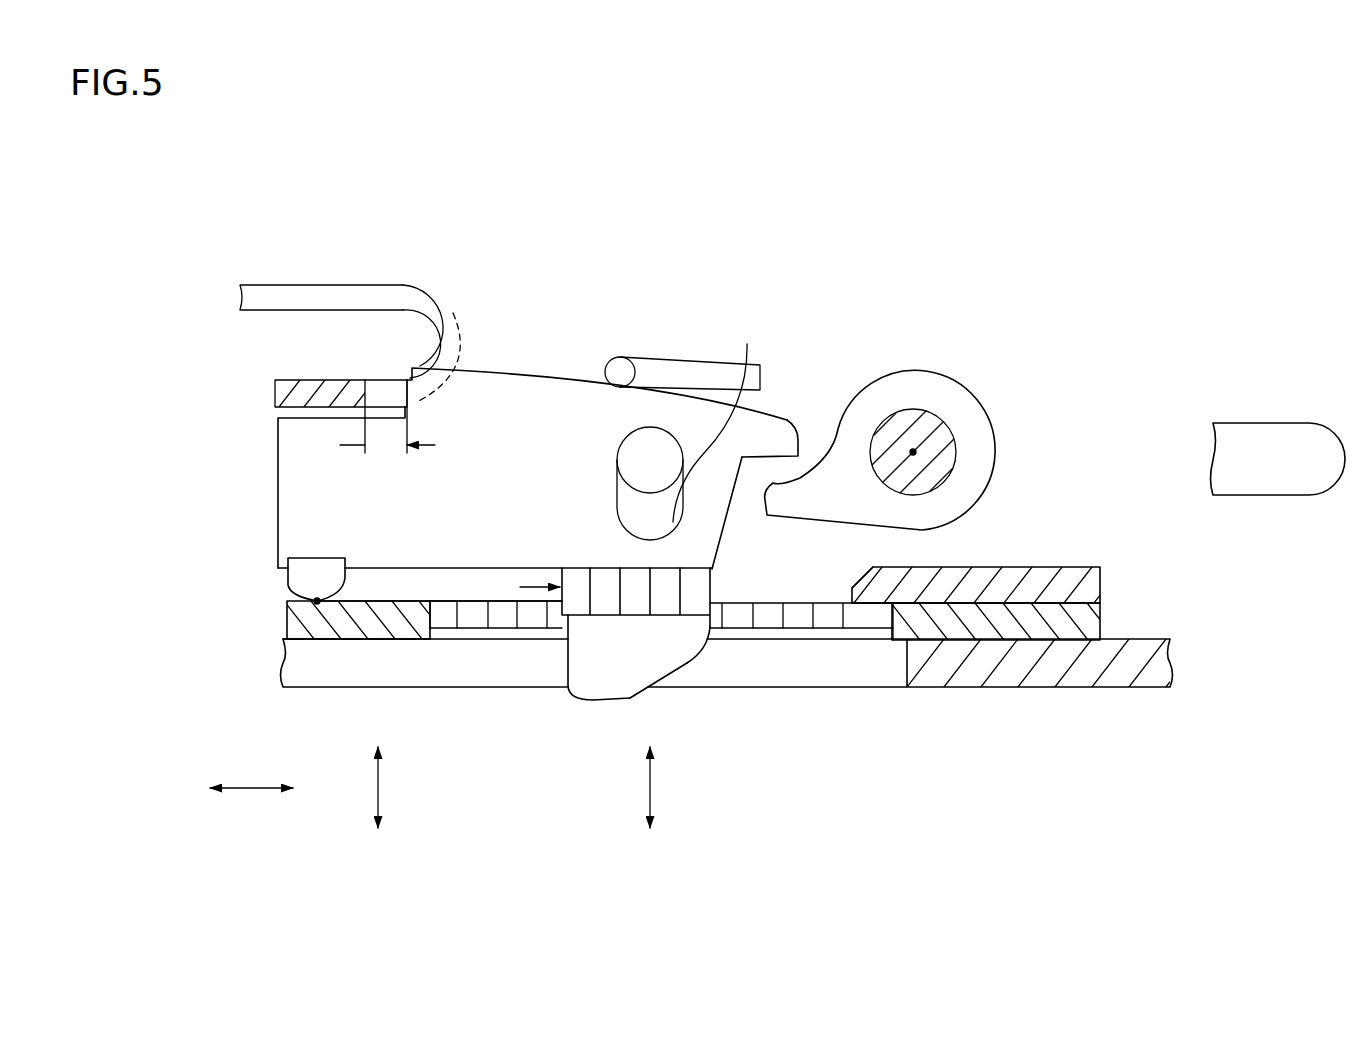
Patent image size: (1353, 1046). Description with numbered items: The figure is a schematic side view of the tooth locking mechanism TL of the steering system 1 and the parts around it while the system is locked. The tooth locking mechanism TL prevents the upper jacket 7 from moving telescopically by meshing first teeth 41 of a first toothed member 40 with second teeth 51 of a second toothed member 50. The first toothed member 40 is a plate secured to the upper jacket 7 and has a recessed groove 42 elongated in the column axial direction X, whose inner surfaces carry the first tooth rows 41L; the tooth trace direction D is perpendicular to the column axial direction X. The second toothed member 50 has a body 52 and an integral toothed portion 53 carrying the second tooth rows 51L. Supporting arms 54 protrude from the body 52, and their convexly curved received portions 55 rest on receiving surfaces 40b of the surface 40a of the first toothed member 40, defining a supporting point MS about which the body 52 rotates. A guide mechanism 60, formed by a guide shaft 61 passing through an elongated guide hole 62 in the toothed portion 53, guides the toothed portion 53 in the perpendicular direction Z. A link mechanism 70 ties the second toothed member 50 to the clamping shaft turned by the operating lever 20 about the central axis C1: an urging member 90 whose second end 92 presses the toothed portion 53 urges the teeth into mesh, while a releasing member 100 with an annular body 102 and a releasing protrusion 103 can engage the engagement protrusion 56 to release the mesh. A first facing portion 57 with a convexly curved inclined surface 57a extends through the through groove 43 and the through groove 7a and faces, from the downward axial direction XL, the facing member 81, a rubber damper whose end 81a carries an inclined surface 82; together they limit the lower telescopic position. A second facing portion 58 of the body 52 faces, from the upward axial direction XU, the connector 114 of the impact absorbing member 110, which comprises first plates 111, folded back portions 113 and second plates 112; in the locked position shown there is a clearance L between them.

The steering system 1 is at (868, 294).
The upper jacket 7 is at (726, 666).
The through groove 7a is at (295, 665).
The operating lever 20 is at (1248, 432).
The first toothed member 40 is at (900, 642).
The surface of first toothed member 40a is at (322, 625).
The receiving surface 40b is at (288, 598).
The first teeth 41 is at (800, 619).
The first tooth row 41L is at (846, 613).
The recessed groove 42 is at (442, 618).
The through groove 43 is at (503, 631).
The second toothed member 50 is at (517, 516).
The second teeth 51 is at (638, 603).
The second tooth row 51L is at (513, 588).
The body 52 is at (303, 490).
The toothed portion 53 is at (713, 545).
The supporting arm 54 is at (313, 573).
The received portion 55 is at (342, 598).
The engagement protrusion 56 is at (782, 435).
The first facing portion 57 is at (647, 687).
The inclined surface 57a is at (693, 664).
The second facing portion 58 is at (433, 377).
The guide mechanism 60 is at (681, 399).
The guide shaft 61 is at (667, 450).
The guide hole 62 is at (770, 342).
The link mechanism 70 is at (656, 274).
The facing member 81 is at (1029, 638).
The end of facing member 81a is at (880, 582).
The inclined surface 82 is at (858, 583).
The urging member 90 is at (647, 355).
The second end 92 is at (615, 358).
The releasing member 100 is at (952, 484).
The body 102 is at (990, 455).
The releasing protrusion 103 is at (792, 507).
The impact absorbing member 110 is at (351, 324).
The first plate 111 is at (308, 295).
The second plate 112 is at (388, 393).
The folded back portion 113 is at (438, 323).
The connector 114 is at (303, 388).
The central axis C1 is at (913, 452).
The clearance L is at (386, 448).
The supporting point MS is at (317, 600).
The tooth locking mechanism TL is at (923, 315).
The column axial direction X is at (250, 783).
The downward axial direction XL is at (186, 788).
The upward axial direction XU is at (315, 788).
The perpendicular direction Z is at (380, 787).
The tooth trace direction D is at (652, 787).